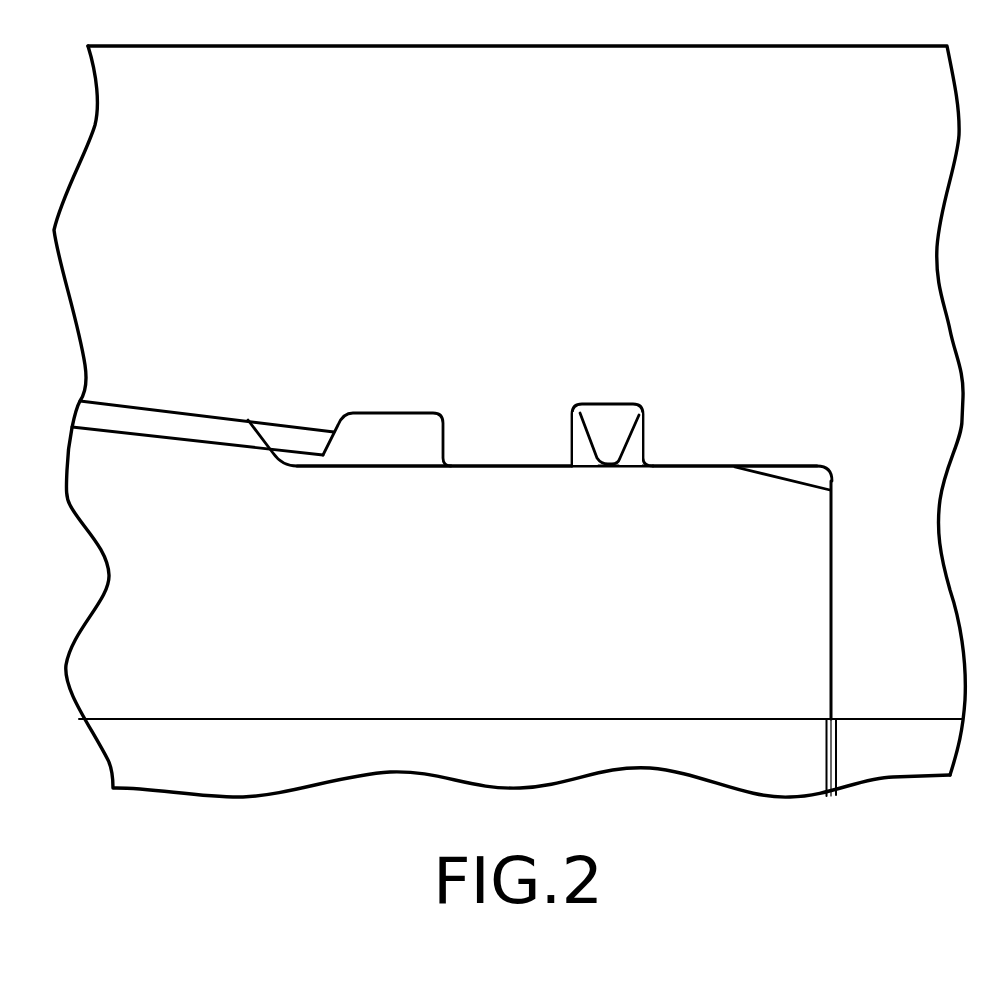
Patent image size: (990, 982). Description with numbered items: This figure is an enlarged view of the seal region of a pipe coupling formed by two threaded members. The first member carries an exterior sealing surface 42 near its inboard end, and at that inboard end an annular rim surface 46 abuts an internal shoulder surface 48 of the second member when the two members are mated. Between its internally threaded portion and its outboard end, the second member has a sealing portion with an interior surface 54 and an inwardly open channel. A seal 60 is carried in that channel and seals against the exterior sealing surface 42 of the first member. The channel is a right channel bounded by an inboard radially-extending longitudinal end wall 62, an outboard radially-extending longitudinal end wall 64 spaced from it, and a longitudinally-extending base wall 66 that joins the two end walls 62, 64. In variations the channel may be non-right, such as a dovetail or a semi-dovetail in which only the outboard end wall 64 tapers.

The exterior sealing surface 42 is at (694, 466).
The annular rim surface 46 is at (830, 655).
The internal shoulder surface 48 is at (830, 635).
The interior surface 54 is at (487, 466).
The seal 60 is at (607, 415).
The inboard radially-extending longitudinal end wall 62 is at (572, 448).
The outboard radially-extending longitudinal end wall 64 is at (642, 448).
The base wall 66 is at (587, 427).